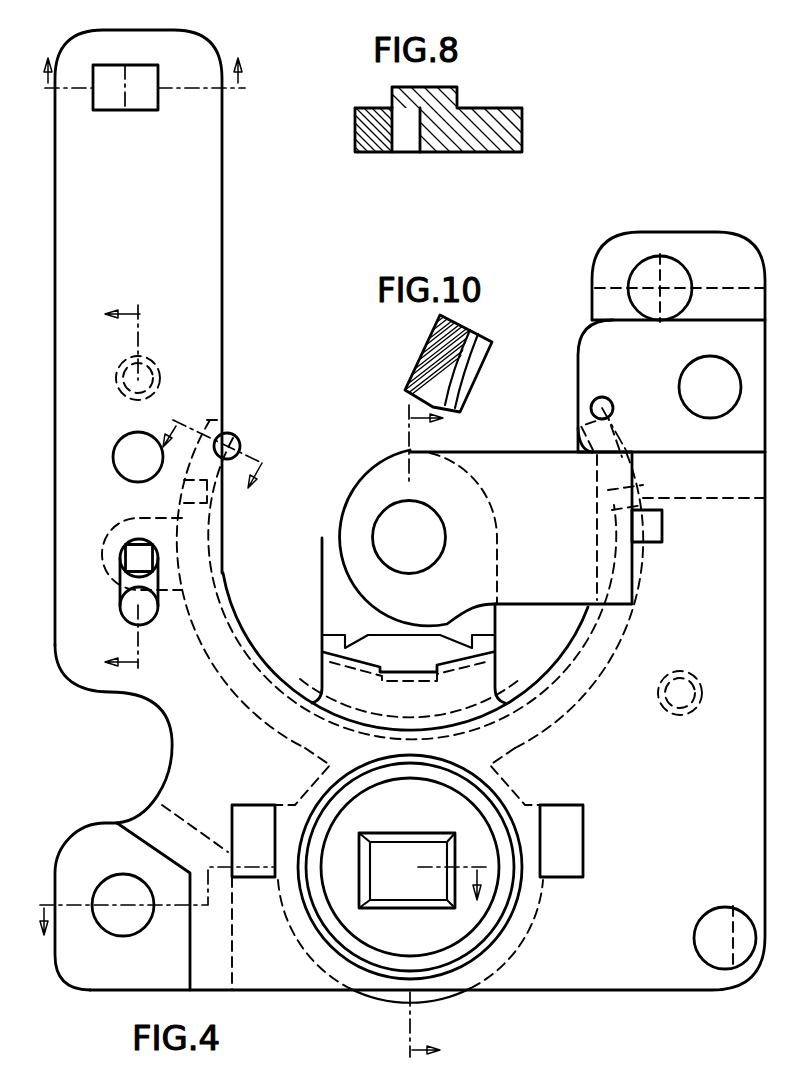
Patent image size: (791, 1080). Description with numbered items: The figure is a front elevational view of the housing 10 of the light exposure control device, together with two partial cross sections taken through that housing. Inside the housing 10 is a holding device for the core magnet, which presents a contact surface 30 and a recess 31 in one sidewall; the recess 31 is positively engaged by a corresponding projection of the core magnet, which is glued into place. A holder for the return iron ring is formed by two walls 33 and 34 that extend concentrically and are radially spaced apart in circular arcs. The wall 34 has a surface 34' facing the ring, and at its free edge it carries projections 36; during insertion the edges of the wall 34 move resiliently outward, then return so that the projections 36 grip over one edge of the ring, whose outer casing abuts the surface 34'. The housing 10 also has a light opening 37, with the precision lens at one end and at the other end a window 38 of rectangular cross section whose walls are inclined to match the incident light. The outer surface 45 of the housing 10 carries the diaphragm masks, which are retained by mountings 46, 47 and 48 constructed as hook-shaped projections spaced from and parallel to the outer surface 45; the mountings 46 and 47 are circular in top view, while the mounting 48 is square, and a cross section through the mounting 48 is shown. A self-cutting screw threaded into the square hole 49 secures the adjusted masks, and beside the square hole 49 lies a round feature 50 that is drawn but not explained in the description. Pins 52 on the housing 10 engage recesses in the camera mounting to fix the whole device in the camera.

In FIG. 4, the housing 10 is at (543, 975).
In FIG. 4, the contact surface 30 is at (402, 660).
In FIG. 4, the recess 31 is at (412, 668).
In FIG. 4, the wall 33 is at (347, 683).
In FIG. 4, the wall 34 is at (381, 725).
In FIG. 4, the surface 34' is at (410, 584).
In FIG. 10, the surface 34' is at (488, 377).
In FIG. 4, the projections 36 is at (230, 445).
In FIG. 10, the projections 36 is at (476, 345).
In FIG. 4, the light opening 37 is at (435, 940).
In FIG. 4, the window 38 is at (398, 882).
In FIG. 4, the outer surface 45 is at (148, 204).
In FIG. 4, the mounting 46 is at (722, 953).
In FIG. 4, the mounting 47 is at (670, 290).
In FIG. 4, the mounting 48 is at (148, 100).
In FIG. 8, the mounting 48 is at (430, 97).
In FIG. 4, the square hole 49 is at (145, 556).
In FIG. 4, the round pin 50 is at (140, 602).
In FIG. 4, the pins 52 is at (150, 375).